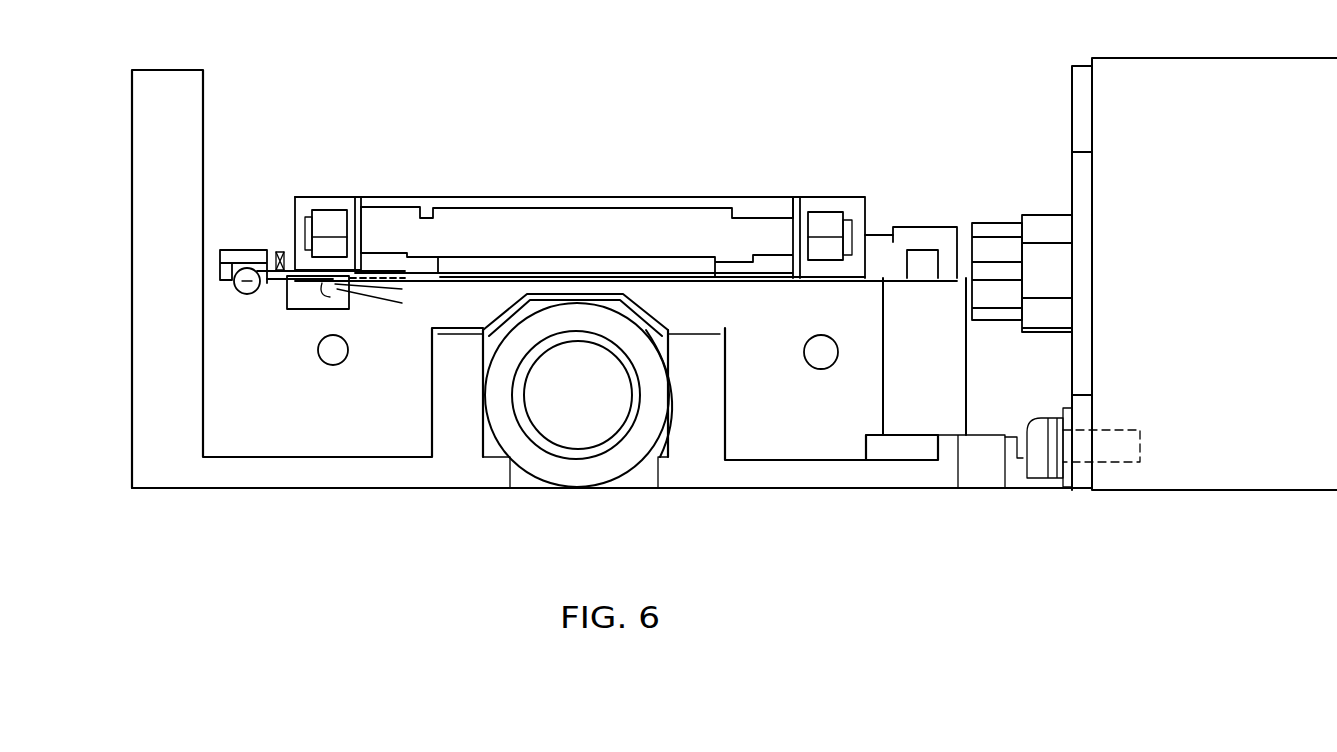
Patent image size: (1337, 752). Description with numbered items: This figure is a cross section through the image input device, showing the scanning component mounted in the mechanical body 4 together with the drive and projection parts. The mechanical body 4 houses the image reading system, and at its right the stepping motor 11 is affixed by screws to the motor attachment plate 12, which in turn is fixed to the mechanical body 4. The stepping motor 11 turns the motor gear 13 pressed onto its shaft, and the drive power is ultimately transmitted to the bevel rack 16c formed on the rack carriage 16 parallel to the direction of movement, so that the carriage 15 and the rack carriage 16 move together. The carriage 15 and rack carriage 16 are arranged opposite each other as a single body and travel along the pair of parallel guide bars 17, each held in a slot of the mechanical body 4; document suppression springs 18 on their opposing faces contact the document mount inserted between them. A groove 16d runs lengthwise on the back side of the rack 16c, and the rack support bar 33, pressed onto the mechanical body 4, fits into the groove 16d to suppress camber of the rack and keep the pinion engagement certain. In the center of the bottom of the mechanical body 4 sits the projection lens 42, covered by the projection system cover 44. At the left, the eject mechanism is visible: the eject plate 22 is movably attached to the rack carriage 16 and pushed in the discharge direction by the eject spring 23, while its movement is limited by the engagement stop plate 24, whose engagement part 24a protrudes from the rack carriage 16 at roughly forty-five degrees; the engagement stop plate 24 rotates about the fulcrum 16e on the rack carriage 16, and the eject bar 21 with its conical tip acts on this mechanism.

The mechanical body 4 is at (160, 458).
The stepping motor 11 is at (1236, 80).
The motor attachment plate 12 is at (1080, 80).
The motor gear 13 is at (1000, 250).
The carriage 15 is at (522, 205).
The rack carriage 16 is at (612, 262).
The bevel rack 16c is at (937, 227).
The groove 16d is at (903, 258).
The fulcrum 16e is at (277, 252).
The guide bars 17 is at (333, 355).
The document suppression springs 18 is at (337, 217).
The eject bar 21 is at (245, 290).
The eject plate 22 is at (378, 222).
The eject spring 23 is at (273, 253).
The engagement stop plate 24 is at (283, 300).
The engagement part 24a is at (225, 265).
The rack support bar 33 is at (917, 395).
The projection lens 42 is at (551, 428).
The projection system cover 44 is at (655, 462).